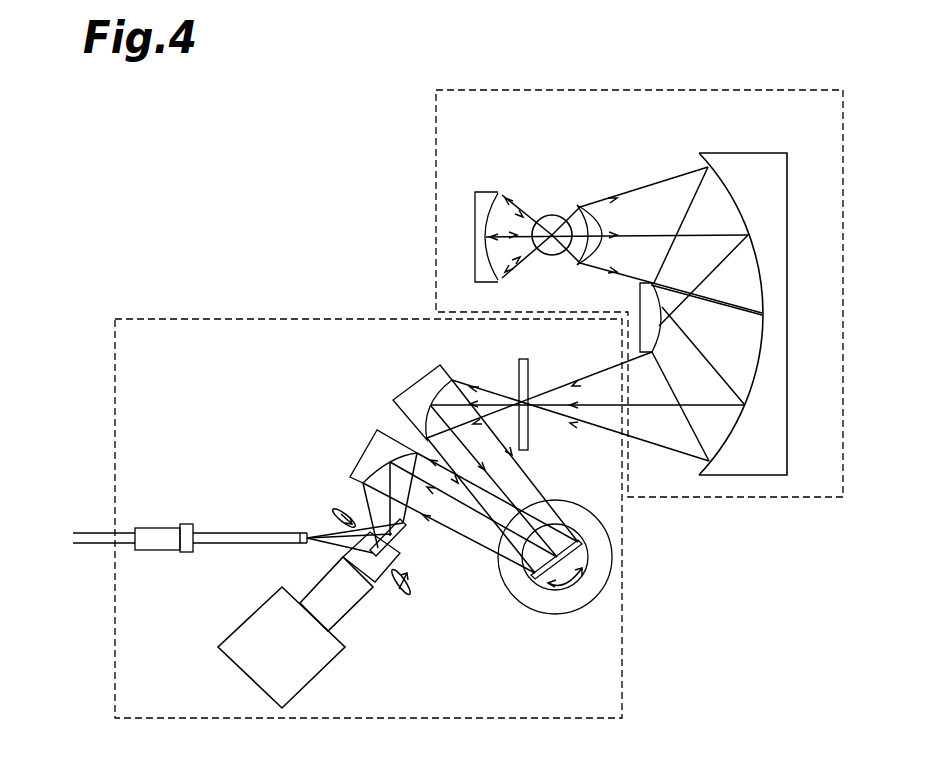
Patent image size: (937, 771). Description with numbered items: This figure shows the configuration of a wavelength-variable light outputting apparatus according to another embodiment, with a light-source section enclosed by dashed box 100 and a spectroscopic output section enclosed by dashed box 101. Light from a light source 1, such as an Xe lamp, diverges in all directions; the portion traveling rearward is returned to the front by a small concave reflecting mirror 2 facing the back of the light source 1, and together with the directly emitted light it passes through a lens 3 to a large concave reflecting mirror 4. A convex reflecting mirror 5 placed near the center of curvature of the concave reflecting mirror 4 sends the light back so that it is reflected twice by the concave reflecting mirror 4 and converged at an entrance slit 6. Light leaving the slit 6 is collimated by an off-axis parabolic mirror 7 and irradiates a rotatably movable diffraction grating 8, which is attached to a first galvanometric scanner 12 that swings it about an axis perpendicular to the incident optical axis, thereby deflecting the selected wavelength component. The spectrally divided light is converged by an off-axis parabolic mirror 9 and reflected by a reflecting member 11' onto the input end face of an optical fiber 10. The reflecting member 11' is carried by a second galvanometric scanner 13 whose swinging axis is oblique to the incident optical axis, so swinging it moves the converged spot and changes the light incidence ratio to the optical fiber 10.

The light source 1 is at (552, 214).
The small concave reflecting mirror 2 is at (490, 192).
The lens 3 is at (592, 205).
The concave reflecting mirror 4 is at (789, 313).
The convex reflecting mirror 5 is at (637, 300).
The entrance slit 6 is at (530, 442).
The off-axis parabolic mirror 7 is at (414, 384).
The diffraction grating 8 is at (547, 580).
The off-axis parabolic mirror 9 is at (362, 455).
The optical fiber 10 is at (213, 533).
The reflecting member 11' is at (414, 588).
The first galvanometric scanner 12 is at (590, 592).
The second galvanometric scanner 13 is at (300, 677).
The light source unit 100 is at (783, 88).
The measurement unit 101 is at (207, 319).